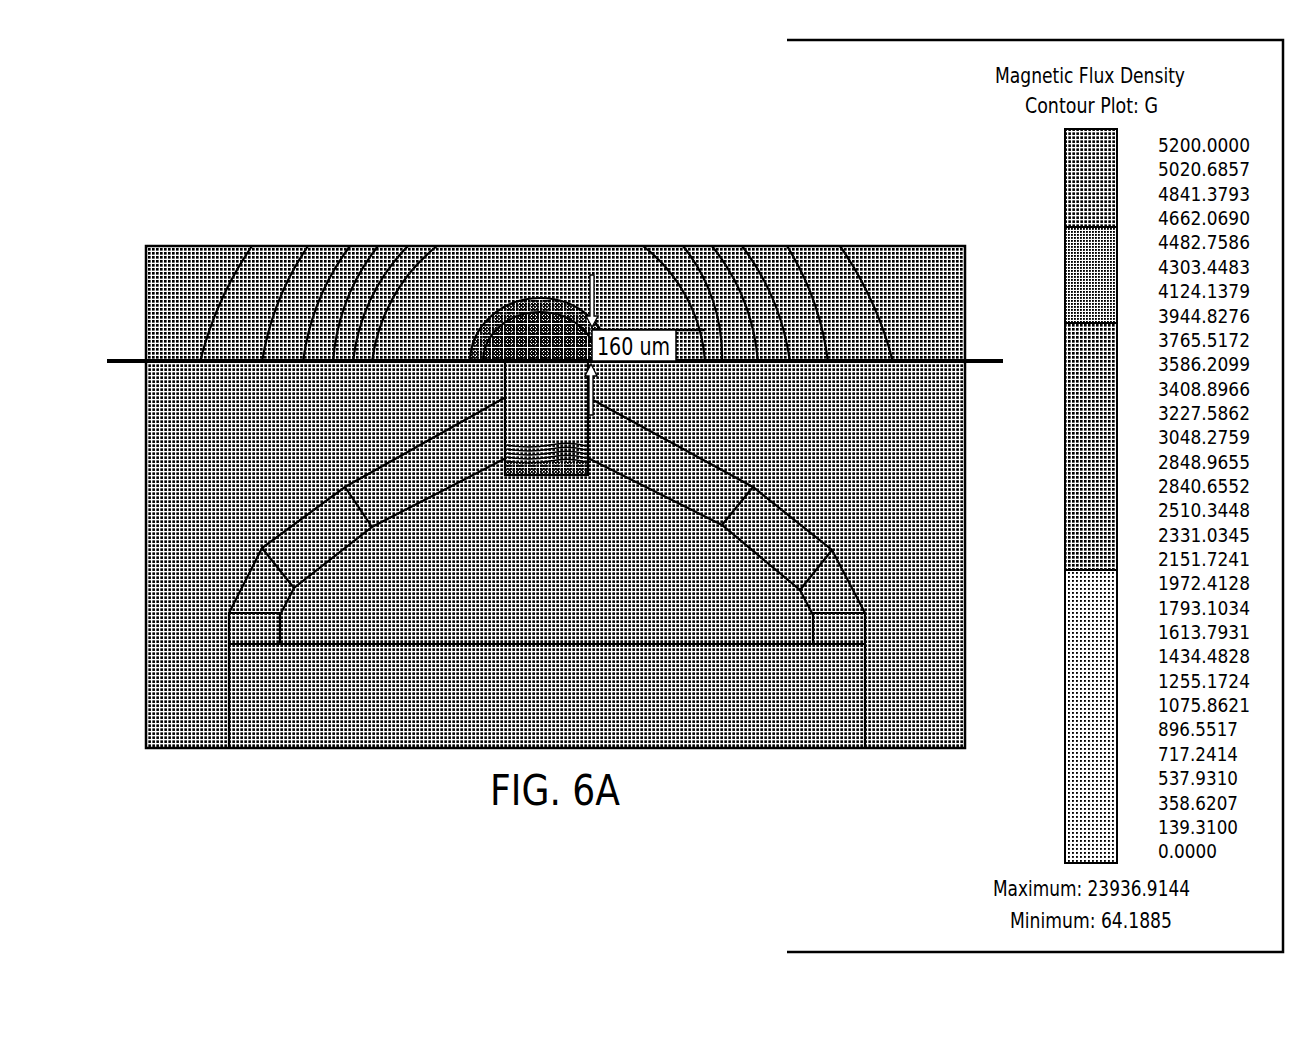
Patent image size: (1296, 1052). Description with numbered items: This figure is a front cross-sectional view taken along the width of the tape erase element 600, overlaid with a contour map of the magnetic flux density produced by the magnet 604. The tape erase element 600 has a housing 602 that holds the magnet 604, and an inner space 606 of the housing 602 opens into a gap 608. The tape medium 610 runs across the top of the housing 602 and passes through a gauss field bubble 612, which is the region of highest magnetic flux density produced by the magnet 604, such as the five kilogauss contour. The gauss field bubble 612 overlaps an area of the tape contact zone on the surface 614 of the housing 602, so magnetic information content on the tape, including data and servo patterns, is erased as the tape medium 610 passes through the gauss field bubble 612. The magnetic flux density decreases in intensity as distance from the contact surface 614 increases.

The tape erase element 600 is at (988, 451).
The housing 602 is at (965, 522).
The magnet 604 is at (730, 644).
The inner space 606 is at (683, 552).
The gap 608 is at (513, 433).
The tape medium 610 is at (115, 357).
The gauss field bubble 612 is at (547, 313).
The surface 614 is at (145, 365).